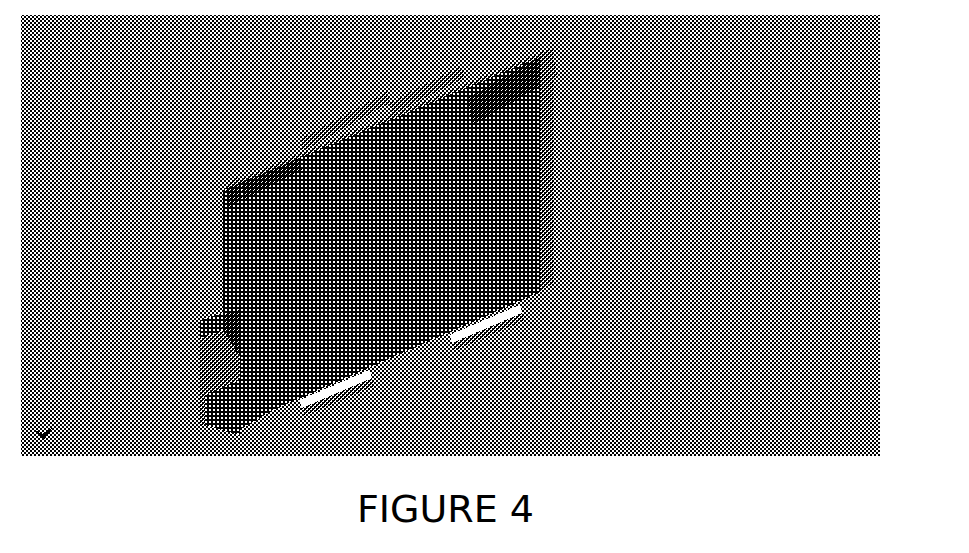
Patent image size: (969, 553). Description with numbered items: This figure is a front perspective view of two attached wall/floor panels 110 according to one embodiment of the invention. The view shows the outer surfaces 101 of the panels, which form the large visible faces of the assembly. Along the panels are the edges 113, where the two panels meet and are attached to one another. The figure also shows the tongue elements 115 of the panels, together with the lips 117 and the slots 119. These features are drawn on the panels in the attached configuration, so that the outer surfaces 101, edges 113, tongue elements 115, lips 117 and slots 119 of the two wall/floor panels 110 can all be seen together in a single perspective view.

The outer surface 101 is at (340, 305).
The wall/floor panel 110 is at (440, 172).
The edge 113 is at (387, 90).
The tongue element 115 is at (387, 90).
The lip 117 is at (370, 387).
The slot 119 is at (467, 97).